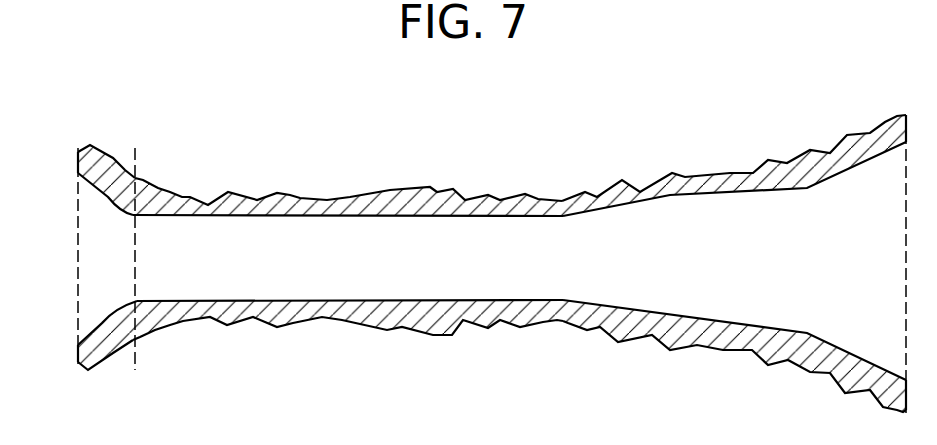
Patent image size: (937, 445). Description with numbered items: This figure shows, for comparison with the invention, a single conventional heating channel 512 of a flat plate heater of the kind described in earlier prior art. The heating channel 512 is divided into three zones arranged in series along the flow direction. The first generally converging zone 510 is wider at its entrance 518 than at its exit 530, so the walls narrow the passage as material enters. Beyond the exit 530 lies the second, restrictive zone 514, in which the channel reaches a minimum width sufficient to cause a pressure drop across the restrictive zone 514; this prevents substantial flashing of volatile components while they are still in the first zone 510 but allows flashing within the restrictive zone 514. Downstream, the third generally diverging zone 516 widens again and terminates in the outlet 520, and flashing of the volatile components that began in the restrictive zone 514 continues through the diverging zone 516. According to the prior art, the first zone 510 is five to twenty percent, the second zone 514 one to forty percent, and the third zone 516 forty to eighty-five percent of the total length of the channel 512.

The first generally converging zone 510 is at (88, 262).
The heating channel 512 is at (637, 218).
The second restrictive zone 514 is at (319, 268).
The third generally diverging zone 516 is at (682, 268).
The entrance 518 is at (66, 229).
The outlet 520 is at (894, 287).
The exit 530 is at (150, 273).